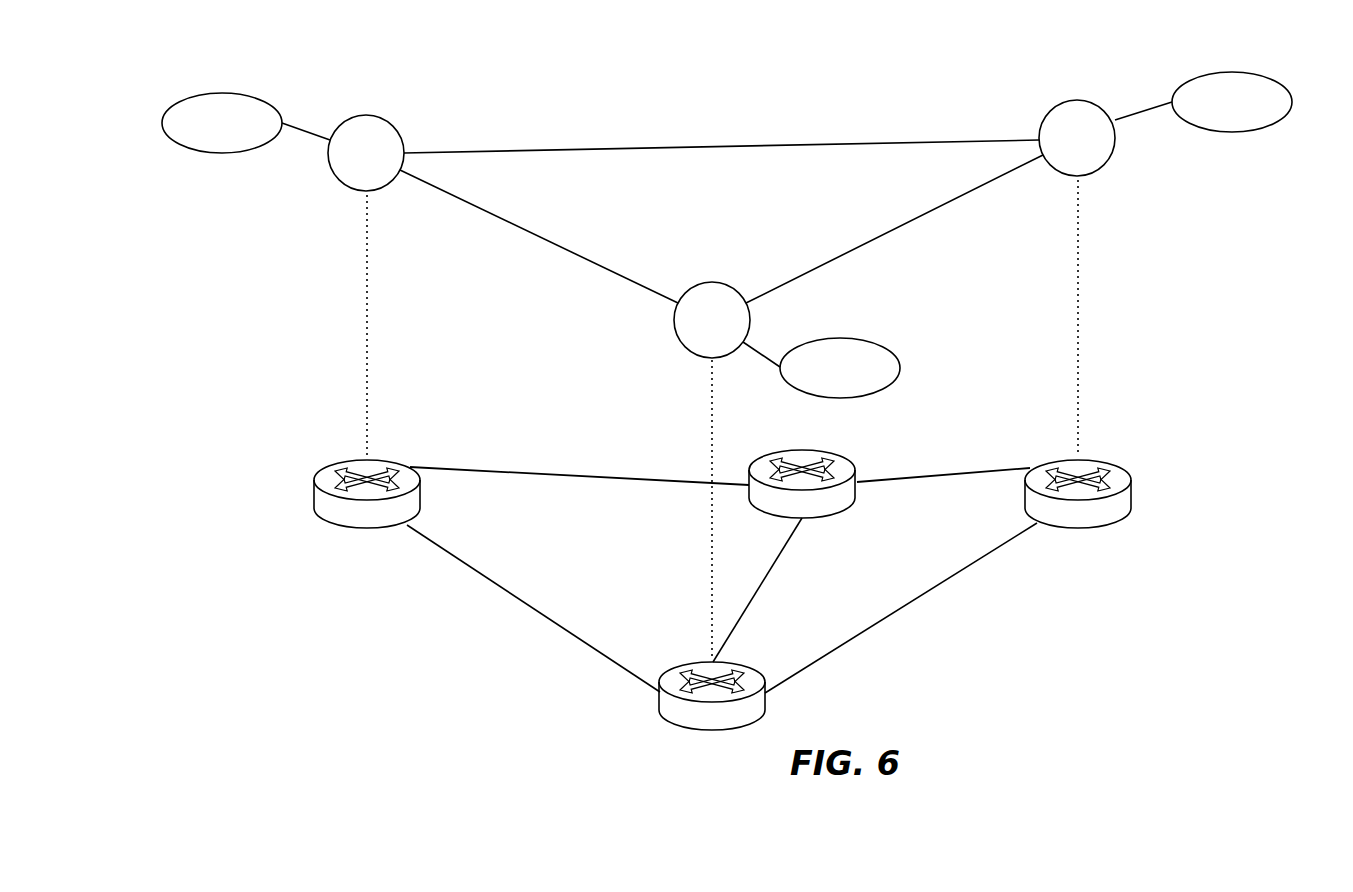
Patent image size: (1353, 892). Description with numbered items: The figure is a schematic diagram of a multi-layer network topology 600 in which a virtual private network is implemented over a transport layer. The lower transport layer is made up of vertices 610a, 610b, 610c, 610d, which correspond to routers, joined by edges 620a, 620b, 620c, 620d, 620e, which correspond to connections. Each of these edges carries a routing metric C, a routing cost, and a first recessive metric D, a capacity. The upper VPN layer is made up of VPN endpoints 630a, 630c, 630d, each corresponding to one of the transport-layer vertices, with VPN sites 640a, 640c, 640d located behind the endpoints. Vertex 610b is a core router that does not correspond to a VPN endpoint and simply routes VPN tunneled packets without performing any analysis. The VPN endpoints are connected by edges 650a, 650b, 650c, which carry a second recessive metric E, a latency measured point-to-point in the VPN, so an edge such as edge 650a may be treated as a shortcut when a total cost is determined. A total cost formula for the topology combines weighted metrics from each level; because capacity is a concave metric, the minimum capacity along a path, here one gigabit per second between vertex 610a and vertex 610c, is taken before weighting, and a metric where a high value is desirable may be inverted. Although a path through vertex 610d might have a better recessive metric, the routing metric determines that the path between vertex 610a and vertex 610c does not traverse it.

The multi-layer network topology 600 is at (222, 52).
The vertex 610a is at (313, 490).
The vertex 610b is at (806, 451).
The vertex 610c is at (1133, 493).
The vertex 610d is at (696, 729).
The edge 620a is at (595, 649).
The edge 620b is at (781, 558).
The edge 620c is at (577, 485).
The edge 620d is at (950, 483).
The edge 620e is at (989, 558).
The VPN endpoint 630a is at (367, 115).
The VPN endpoint 630c is at (1078, 100).
The VPN endpoint 630d is at (712, 282).
The VPN site 640a is at (222, 153).
The VPN site 640c is at (1232, 132).
The VPN site 640d is at (900, 368).
The edge 650a is at (613, 148).
The edge 650b is at (940, 205).
The edge 650c is at (496, 214).